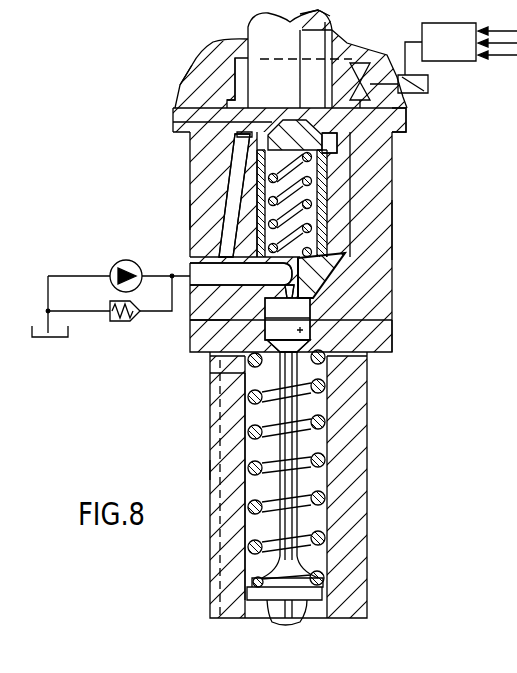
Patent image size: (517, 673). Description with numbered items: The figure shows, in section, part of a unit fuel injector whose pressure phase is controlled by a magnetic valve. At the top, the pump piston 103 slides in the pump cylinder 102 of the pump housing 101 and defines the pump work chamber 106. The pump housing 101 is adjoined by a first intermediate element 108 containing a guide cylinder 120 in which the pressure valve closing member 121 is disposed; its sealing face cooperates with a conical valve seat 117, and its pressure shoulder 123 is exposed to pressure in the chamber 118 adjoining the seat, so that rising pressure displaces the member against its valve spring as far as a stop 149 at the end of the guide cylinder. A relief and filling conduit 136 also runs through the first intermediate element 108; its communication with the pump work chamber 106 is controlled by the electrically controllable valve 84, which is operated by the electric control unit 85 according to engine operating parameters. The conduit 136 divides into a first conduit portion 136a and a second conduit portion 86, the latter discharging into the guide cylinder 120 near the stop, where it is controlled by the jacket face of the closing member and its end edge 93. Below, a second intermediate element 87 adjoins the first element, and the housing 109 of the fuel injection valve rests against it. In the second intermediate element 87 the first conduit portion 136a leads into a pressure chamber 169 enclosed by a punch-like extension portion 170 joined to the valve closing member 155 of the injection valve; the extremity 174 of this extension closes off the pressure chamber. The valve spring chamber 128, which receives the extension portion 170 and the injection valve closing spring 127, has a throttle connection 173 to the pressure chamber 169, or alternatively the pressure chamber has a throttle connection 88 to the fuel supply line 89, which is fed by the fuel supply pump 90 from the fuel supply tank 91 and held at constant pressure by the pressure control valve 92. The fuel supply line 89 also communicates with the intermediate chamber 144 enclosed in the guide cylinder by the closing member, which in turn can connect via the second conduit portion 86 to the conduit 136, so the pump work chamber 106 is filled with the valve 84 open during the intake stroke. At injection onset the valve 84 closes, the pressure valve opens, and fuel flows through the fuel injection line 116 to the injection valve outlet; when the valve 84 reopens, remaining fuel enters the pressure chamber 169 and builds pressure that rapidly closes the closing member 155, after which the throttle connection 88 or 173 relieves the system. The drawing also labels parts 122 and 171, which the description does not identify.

The electrically controllable valve 84 is at (428, 84).
The electric control unit 85 is at (466, 52).
The second conduit portion 86 is at (323, 273).
The second intermediate element 87 is at (378, 306).
The throttle connection 88 is at (187, 320).
The fuel supply line 89 is at (207, 275).
The fuel supply pump 90 is at (113, 266).
The fuel supply tank 91 is at (30, 320).
The pressure control valve 92 is at (112, 308).
The end edge 93 is at (248, 235).
The pump housing 101 is at (193, 72).
The pump cylinder 102 is at (205, 47).
The pump piston 103 is at (263, 22).
The pump work chamber 106 is at (295, 52).
The first intermediate element 108 is at (200, 172).
The housing of the fuel injection valve 109 is at (353, 453).
The fuel injection line 116 is at (186, 100).
The conical valve seat 117 is at (170, 115).
The chamber adjoining the valve seat 118 is at (340, 144).
The guide cylinder 120 is at (228, 240).
The pressure valve closing member 121 is at (185, 133).
The compression spring 122 is at (337, 178).
The pressure shoulder 123 is at (406, 115).
The injection valve closing spring 127 is at (242, 410).
The valve spring chamber 128 is at (313, 405).
The relief and filling conduit 136 is at (370, 205).
The first conduit portion 136a is at (383, 282).
The intermediate chamber 144 is at (207, 178).
The stop 149 is at (392, 230).
The valve closing member of the fuel injection valve 155 is at (297, 610).
The pressure chamber 169 is at (215, 332).
The punch-like extension portion 170 is at (287, 488).
The hydraulic tappet 171 is at (312, 300).
The throttle connection 173 is at (212, 360).
The extremity 174 is at (316, 338).